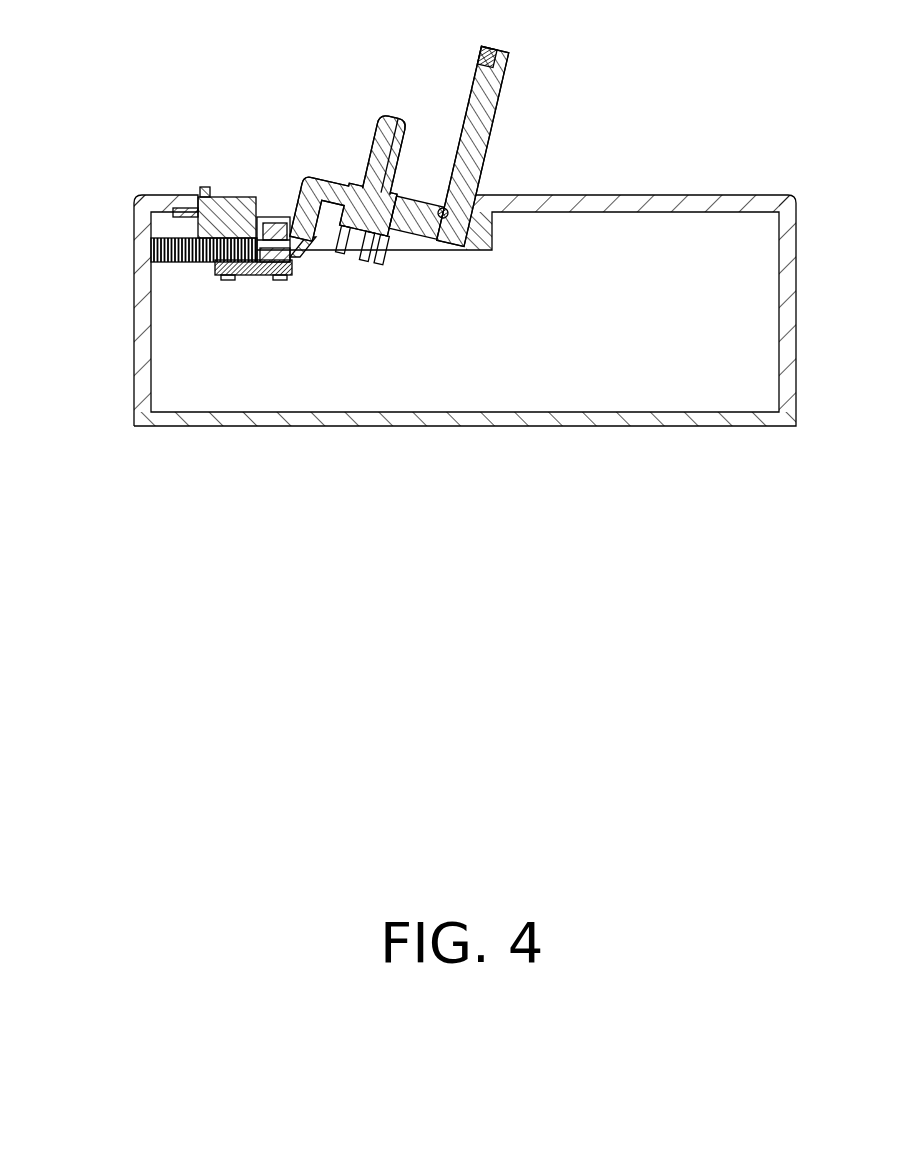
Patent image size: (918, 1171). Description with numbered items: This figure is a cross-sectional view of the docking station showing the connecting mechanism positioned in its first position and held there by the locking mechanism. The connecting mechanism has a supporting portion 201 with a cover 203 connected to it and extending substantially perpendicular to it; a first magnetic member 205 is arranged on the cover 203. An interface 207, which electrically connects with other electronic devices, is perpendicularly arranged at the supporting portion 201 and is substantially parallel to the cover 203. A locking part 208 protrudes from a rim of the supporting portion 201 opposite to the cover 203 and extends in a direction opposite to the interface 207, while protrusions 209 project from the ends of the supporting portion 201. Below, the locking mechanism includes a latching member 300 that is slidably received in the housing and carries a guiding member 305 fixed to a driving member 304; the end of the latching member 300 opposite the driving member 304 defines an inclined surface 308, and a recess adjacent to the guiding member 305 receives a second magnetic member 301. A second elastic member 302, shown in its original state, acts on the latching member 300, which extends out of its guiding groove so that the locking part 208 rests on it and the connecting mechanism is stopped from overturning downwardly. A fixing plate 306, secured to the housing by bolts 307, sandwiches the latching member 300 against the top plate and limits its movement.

The supporting portion 201 is at (367, 221).
The cover 203 is at (470, 145).
The first magnetic member 205 is at (487, 56).
The interface 207 is at (385, 154).
The locking part 208 is at (301, 200).
The protrusions 209 is at (362, 245).
The latching member 300 is at (423, 246).
The second magnetic member 301 is at (270, 217).
The second elastic member 302 is at (151, 243).
The driving member 304 is at (203, 187).
The guiding member 305 is at (220, 196).
The fixing plate 306 is at (213, 272).
The bolts 307 is at (220, 282).
The inclined surface 308 is at (302, 261).